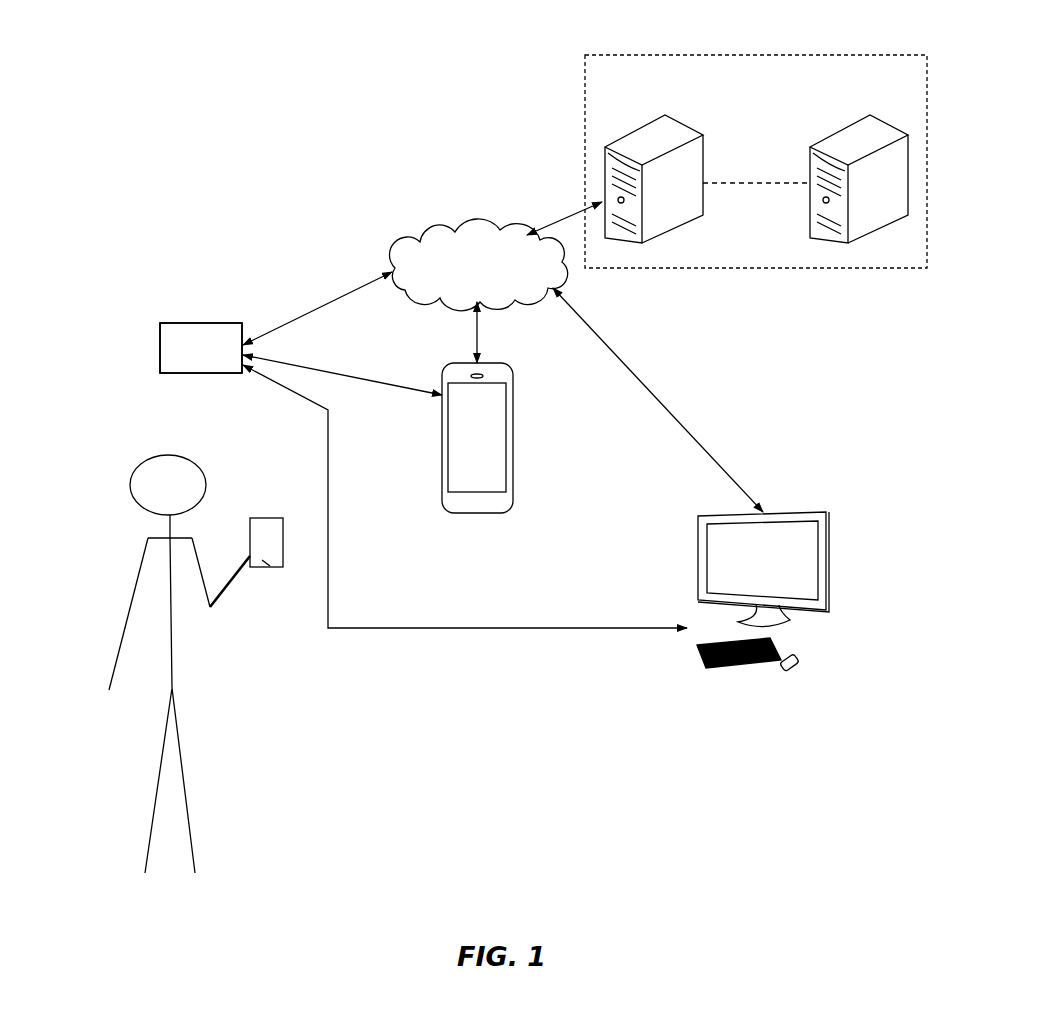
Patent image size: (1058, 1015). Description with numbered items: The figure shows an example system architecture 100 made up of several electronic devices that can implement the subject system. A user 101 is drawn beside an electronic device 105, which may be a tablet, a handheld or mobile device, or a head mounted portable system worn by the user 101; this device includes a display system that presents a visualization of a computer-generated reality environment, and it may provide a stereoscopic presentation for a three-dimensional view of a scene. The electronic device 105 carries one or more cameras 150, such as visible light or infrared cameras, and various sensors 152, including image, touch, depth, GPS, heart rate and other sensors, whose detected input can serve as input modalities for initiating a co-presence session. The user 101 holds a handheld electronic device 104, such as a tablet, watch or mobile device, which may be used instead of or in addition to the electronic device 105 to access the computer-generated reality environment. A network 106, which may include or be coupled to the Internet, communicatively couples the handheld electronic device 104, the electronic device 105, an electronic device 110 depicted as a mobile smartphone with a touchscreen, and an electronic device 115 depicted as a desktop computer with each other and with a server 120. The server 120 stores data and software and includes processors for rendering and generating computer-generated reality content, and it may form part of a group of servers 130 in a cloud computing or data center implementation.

The system architecture 100 is at (190, 28).
The user 101 is at (148, 543).
The handheld electronic device 104 is at (277, 518).
The electronic device 105 is at (228, 323).
The network 106 is at (477, 228).
The electronic device 110 is at (477, 514).
The electronic device 115 is at (768, 676).
The server 120 is at (633, 135).
The group of servers 130 is at (720, 161).
The cameras 150 is at (202, 323).
The sensors 152 is at (160, 322).